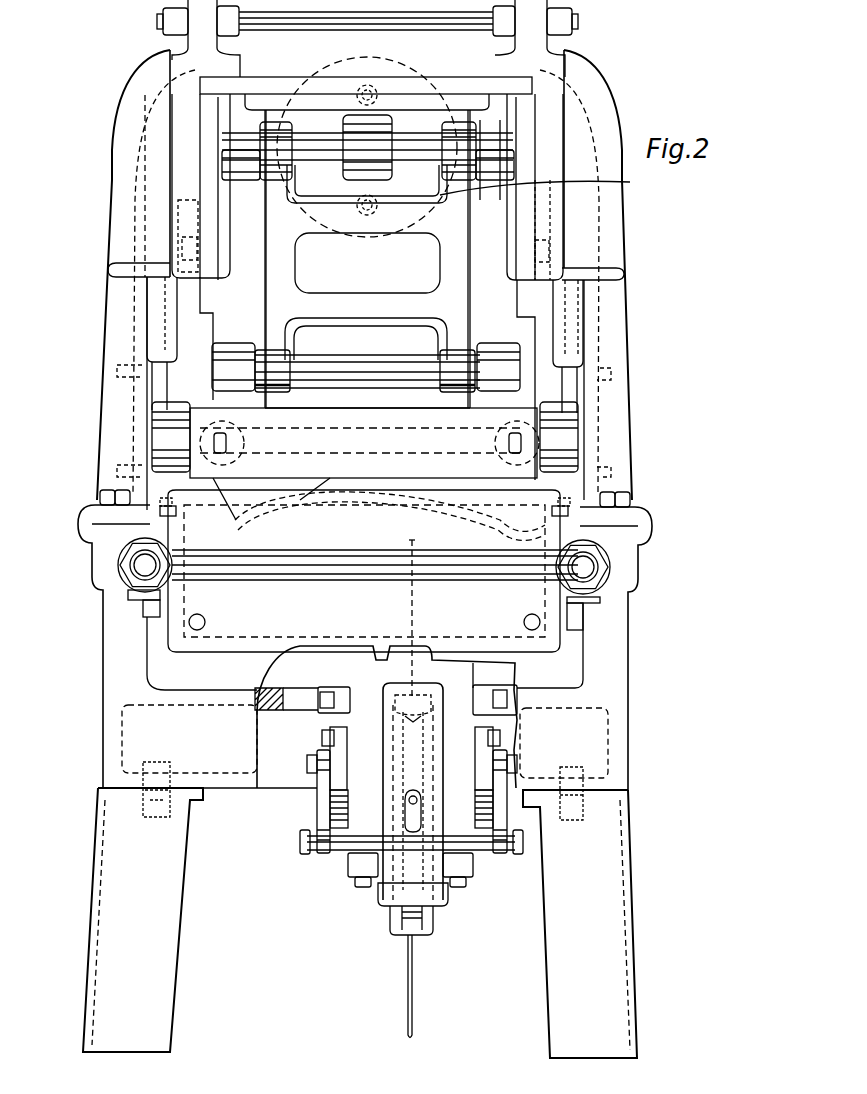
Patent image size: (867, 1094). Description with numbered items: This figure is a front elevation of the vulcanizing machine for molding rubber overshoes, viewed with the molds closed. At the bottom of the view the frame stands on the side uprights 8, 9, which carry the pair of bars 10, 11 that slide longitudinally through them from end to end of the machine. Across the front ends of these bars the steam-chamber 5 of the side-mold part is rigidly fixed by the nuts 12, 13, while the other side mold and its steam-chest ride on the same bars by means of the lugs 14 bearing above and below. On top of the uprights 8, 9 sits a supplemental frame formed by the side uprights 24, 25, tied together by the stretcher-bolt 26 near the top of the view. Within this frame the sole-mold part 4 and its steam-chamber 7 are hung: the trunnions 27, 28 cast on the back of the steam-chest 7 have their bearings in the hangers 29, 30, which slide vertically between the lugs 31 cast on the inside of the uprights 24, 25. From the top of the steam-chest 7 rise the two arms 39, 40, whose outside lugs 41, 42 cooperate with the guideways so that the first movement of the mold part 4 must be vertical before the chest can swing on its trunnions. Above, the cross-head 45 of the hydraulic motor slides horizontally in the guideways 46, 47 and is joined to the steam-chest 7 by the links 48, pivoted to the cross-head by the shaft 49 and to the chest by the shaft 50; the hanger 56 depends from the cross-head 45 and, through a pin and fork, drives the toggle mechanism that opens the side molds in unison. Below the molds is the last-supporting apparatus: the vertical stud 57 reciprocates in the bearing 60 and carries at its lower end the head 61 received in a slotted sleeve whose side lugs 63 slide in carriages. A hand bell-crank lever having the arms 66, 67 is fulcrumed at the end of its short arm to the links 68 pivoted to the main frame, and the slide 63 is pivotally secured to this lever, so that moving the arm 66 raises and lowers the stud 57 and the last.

The sole-mold part 4 is at (262, 490).
The steam-chamber 5 is at (364, 571).
The steam-chamber 7 is at (364, 443).
The side upright 8 is at (578, 840).
The side upright 9 is at (200, 837).
The bar 10 is at (600, 600).
The bar 11 is at (135, 597).
The nut 12 is at (612, 562).
The nut 13 is at (120, 566).
The lug 14 is at (165, 506).
The side upright 24 is at (592, 412).
The side upright 25 is at (130, 366).
The stretcher-bolt 26 is at (313, 31).
The trunnion 27 is at (580, 442).
The trunnion 28 is at (150, 440).
The hanger 29 is at (570, 392).
The hanger 30 is at (158, 388).
The lug 31 is at (150, 325).
The arm 39 is at (522, 248).
The arm 40 is at (206, 235).
The lug 41 is at (545, 252).
The lug 42 is at (183, 246).
The cross-head 45 is at (448, 90).
The guideway 46 is at (547, 85).
The guideway 47 is at (208, 64).
The link 48 is at (367, 259).
The shaft 49 is at (368, 147).
The shaft 50 is at (378, 368).
The hanger 56 is at (548, 160).
The vertical stud 57 is at (481, 585).
The vertical bearing 60 is at (434, 668).
The head 61 is at (398, 700).
The side lug 63 is at (332, 806).
The arm 66 is at (312, 828).
The arm 67 is at (322, 774).
The link 68 is at (338, 745).